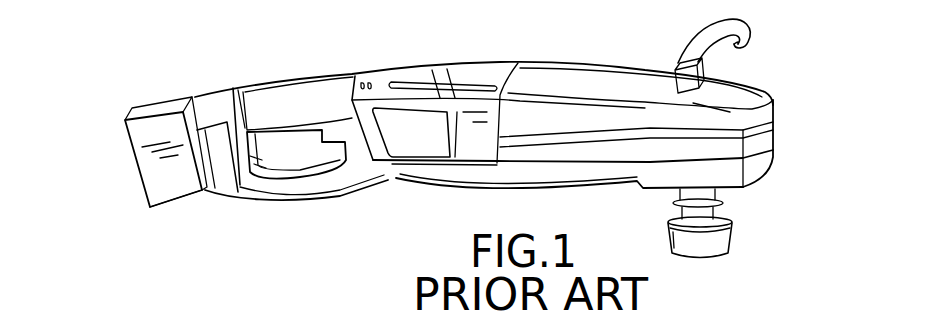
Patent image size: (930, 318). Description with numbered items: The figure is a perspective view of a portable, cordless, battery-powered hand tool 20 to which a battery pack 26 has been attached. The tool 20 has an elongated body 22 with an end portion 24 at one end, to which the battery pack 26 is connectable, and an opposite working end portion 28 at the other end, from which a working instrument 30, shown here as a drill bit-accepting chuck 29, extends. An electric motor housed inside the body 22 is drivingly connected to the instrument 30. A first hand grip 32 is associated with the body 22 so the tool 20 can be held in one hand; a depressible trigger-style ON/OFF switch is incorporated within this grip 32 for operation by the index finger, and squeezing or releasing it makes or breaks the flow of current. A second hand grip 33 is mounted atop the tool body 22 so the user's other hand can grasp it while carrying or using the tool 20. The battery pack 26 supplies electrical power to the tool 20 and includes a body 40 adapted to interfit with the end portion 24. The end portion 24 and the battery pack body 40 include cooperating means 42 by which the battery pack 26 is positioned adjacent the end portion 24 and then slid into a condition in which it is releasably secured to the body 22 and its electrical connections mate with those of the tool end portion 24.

The hand tool 20 is at (614, 40).
The elongated body 22 is at (490, 62).
The end portion 24 is at (196, 126).
The battery pack 26 is at (143, 103).
The working end portion 28 is at (752, 165).
The drill bit-accepting chuck 29 is at (735, 230).
The working instrument 30 is at (700, 262).
The first hand grip 32 is at (302, 79).
The second hand grip 33 is at (733, 23).
The body of battery pack 40 is at (182, 196).
The cooperating means 42 is at (185, 68).